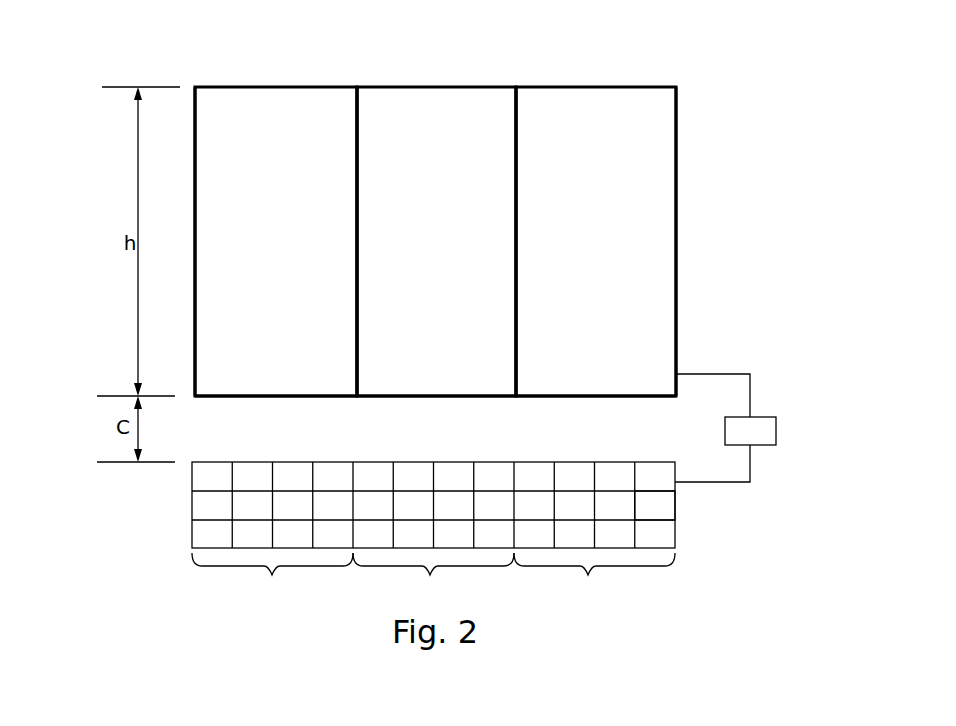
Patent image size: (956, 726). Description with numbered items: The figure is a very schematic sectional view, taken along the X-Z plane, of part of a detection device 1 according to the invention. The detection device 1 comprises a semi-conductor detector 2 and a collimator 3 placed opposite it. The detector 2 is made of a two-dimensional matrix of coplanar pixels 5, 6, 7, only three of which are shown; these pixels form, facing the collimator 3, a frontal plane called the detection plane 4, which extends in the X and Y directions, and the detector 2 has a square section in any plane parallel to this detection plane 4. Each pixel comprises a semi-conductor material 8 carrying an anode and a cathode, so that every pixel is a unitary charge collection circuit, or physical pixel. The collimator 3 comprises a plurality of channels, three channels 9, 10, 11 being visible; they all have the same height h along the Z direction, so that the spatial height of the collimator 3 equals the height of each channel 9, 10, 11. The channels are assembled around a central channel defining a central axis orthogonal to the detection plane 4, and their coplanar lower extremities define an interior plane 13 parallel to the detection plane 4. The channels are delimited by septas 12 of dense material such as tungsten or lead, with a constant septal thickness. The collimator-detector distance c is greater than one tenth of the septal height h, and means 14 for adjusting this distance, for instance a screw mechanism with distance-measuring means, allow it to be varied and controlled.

The detection device 1 is at (731, 248).
The semi-conductor detector 2 is at (113, 519).
The collimator 3 is at (116, 274).
The detection plane 4 is at (661, 461).
The pixel 5 is at (272, 578).
The pixel 6 is at (433, 578).
The pixel 7 is at (594, 579).
The semi-conductor material 8 is at (660, 513).
The channel 9 is at (272, 82).
The channel 10 is at (440, 82).
The channel 11 is at (601, 82).
The septa 12 is at (195, 119).
The interior plane of the collimator 13 is at (590, 406).
The means for adjusting the collimator-detector distance 14 is at (778, 432).